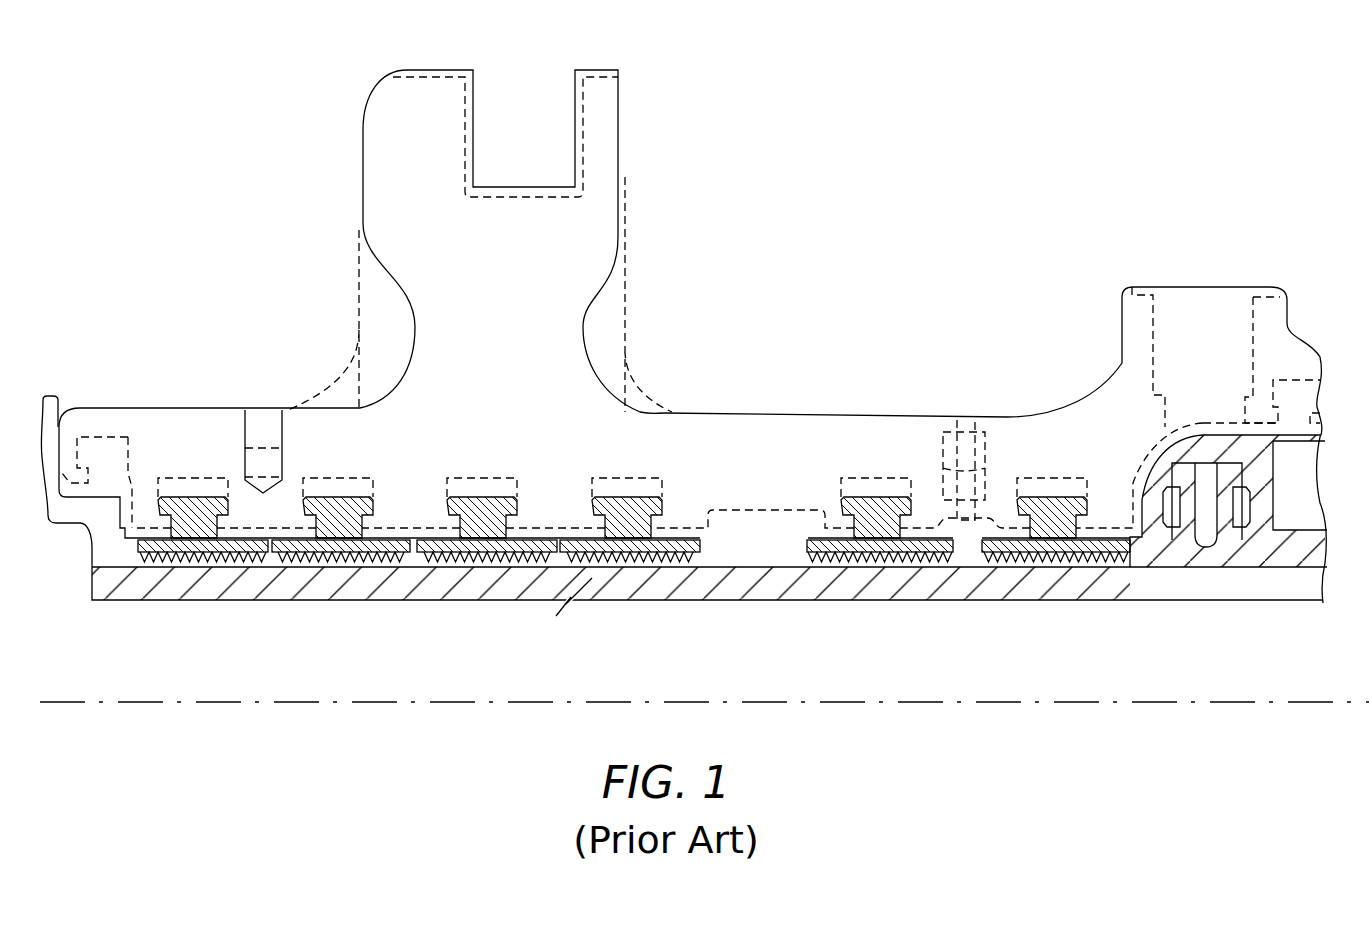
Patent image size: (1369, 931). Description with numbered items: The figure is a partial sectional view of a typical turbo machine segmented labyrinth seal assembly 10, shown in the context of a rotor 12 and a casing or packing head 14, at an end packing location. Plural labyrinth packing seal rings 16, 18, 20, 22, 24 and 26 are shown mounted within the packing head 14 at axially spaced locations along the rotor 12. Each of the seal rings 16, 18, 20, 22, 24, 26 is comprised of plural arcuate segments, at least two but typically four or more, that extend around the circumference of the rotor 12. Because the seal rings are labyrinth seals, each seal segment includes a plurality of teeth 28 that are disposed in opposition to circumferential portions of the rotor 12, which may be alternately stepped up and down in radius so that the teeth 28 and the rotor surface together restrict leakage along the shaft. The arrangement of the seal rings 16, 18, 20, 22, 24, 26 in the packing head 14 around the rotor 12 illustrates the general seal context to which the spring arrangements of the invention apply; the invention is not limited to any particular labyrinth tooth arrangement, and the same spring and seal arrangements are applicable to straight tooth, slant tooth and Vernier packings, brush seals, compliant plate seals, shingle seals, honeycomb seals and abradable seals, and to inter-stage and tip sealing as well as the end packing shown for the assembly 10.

The labyrinth seal assembly 10 is at (1024, 182).
The rotor 12 is at (742, 580).
The packing head 14 is at (433, 366).
The labyrinth packing seal ring 16 is at (193, 518).
The labyrinth packing seal ring 18 is at (330, 510).
The labyrinth packing seal ring 20 is at (495, 510).
The labyrinth packing seal ring 22 is at (632, 512).
The labyrinth packing seal ring 24 is at (880, 530).
The labyrinth packing seal ring 26 is at (1056, 527).
The teeth 28 is at (967, 573).